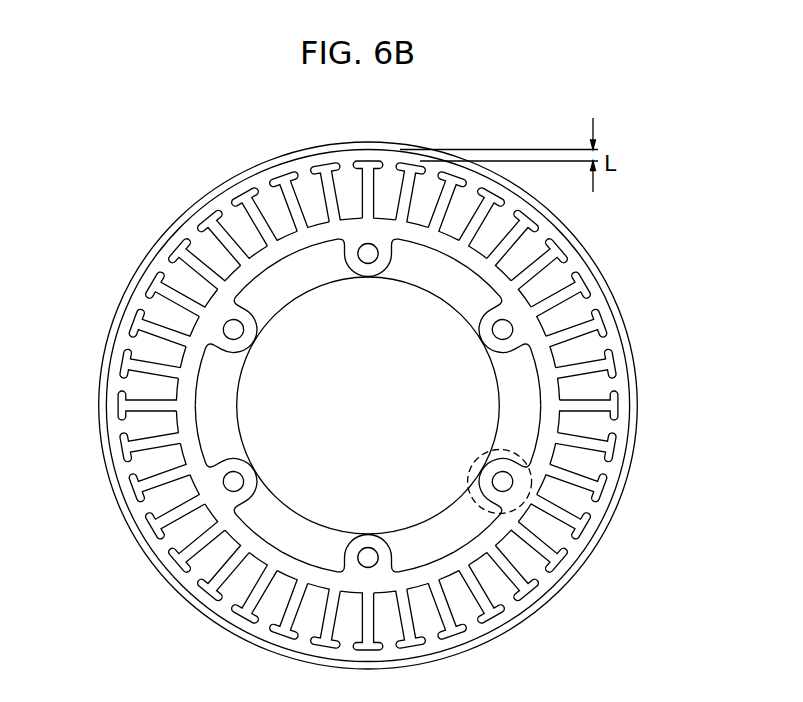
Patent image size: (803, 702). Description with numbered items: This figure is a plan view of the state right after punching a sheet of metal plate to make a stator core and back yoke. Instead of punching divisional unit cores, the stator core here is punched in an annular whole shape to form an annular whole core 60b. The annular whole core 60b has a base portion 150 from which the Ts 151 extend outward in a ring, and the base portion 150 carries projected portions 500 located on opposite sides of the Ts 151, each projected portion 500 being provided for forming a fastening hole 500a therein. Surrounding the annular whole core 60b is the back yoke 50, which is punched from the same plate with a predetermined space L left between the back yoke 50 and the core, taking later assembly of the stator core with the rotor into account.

The back yoke 50 is at (163, 238).
The annular whole core 60b is at (273, 264).
The base portion 150 is at (193, 394).
The Ts 151 is at (141, 363).
The projected portions 500 is at (466, 480).
The fastening hole 500a is at (491, 336).